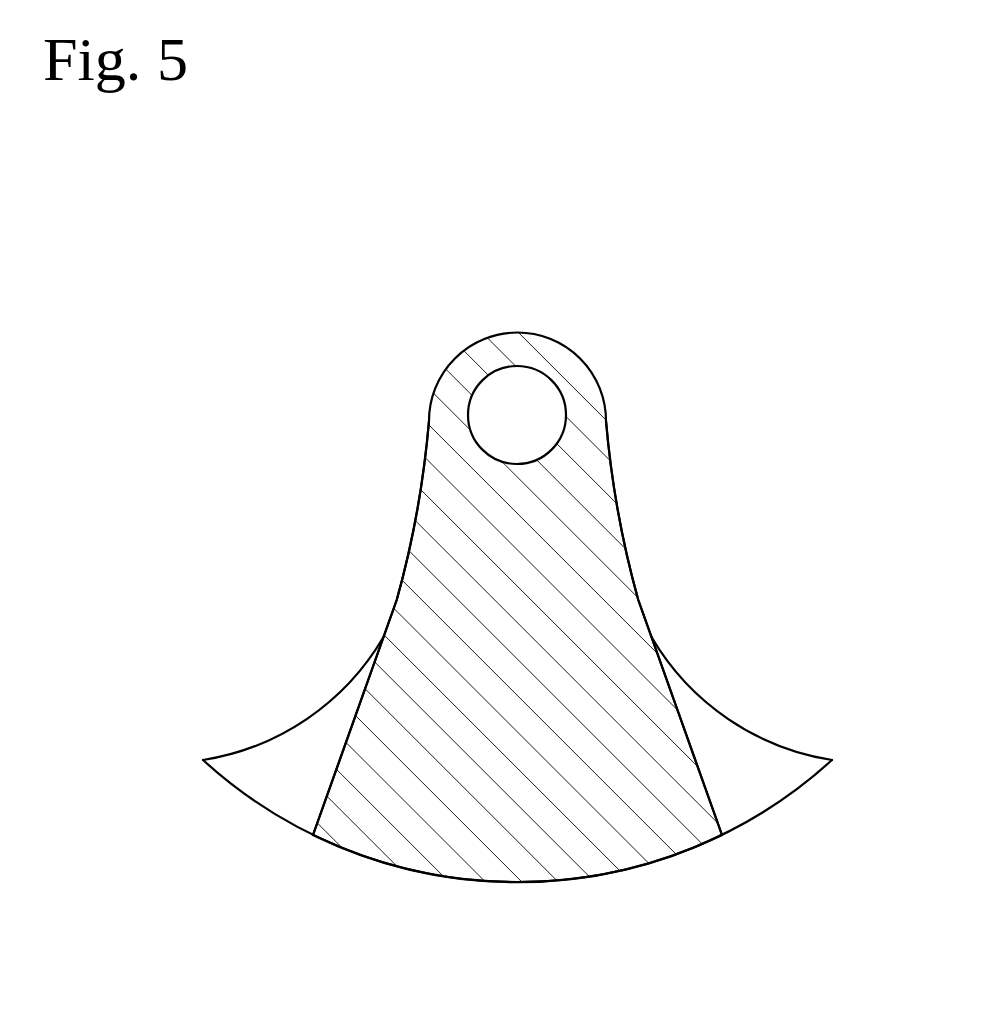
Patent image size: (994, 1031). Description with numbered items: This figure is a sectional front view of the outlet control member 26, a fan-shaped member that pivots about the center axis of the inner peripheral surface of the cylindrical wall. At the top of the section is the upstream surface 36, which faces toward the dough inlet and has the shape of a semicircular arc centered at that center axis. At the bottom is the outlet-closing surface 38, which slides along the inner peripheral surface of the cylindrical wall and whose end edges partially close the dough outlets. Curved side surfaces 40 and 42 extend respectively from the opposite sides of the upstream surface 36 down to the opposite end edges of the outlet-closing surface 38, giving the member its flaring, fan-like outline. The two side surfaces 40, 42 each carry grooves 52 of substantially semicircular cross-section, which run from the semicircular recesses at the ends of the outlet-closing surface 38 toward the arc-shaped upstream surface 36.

The outlet control member 26 is at (360, 403).
The upstream surface 36 is at (547, 340).
The outlet-closing surface 38 is at (500, 885).
The curved side surface 40 is at (412, 538).
The curved side surface 42 is at (617, 517).
The grooves 52 is at (278, 773).